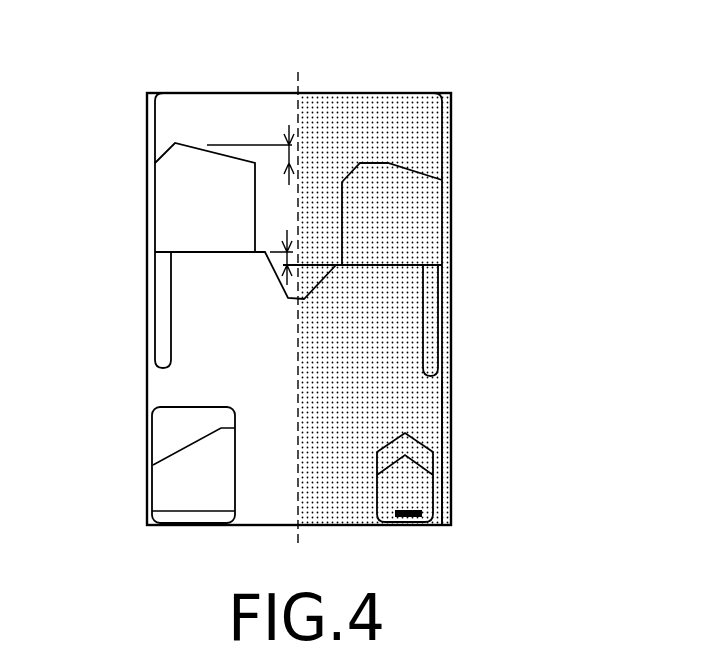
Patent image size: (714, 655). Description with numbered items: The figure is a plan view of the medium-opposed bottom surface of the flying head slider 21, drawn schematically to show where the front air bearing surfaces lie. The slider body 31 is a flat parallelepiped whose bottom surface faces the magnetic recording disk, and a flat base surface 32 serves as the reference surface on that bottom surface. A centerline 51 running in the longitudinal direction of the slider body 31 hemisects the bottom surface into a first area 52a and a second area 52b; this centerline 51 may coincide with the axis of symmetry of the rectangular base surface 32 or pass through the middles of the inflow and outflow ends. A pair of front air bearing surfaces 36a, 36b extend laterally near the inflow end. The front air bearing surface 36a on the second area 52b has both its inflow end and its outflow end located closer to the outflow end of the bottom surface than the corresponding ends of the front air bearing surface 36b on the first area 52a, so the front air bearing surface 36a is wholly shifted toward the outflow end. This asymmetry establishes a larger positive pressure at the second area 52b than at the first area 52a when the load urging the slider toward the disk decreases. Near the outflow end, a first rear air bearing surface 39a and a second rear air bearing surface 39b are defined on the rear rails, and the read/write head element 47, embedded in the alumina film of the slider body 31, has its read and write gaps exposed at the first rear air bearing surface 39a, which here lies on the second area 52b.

The flying head slider 21 is at (514, 163).
The slider body 31 is at (451, 302).
The flat base surface 32 is at (451, 420).
The front air bearing surface 36a is at (423, 215).
The front air bearing surface 36b is at (170, 212).
The first rear air bearing surface 39a is at (430, 495).
The second rear air bearing surface 39b is at (167, 484).
The read/write head element 47 is at (415, 520).
The centerline 51 is at (299, 75).
The first area 52a is at (215, 66).
The second area 52b is at (386, 68).